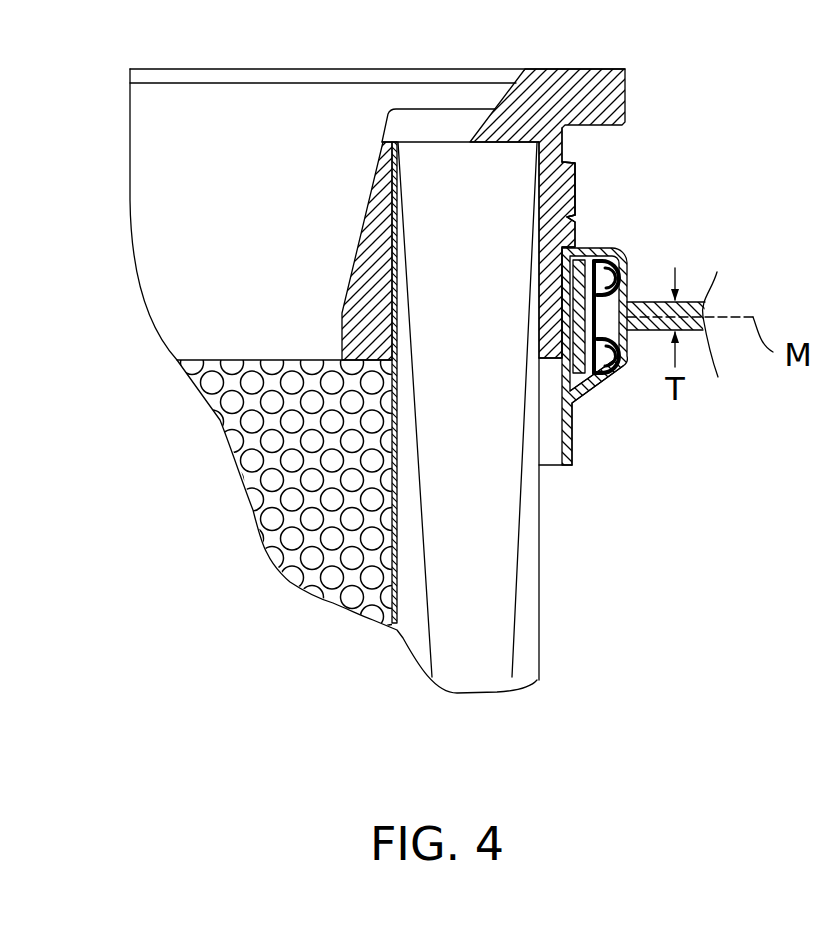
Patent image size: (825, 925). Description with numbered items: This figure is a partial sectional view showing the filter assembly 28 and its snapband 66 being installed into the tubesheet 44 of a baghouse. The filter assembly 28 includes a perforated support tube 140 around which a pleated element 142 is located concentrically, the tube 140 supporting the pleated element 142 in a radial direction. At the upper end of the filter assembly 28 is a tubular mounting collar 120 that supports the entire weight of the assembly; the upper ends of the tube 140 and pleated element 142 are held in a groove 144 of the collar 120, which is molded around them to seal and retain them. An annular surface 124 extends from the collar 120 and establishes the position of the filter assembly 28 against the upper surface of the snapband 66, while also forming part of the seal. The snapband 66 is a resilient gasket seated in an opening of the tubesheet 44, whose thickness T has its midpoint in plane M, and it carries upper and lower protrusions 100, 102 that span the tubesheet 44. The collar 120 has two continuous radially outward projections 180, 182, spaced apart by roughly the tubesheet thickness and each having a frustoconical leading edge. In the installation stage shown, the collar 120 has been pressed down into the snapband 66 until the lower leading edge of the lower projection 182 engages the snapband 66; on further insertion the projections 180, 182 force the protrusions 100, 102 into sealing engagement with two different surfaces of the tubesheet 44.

The filter assembly 28 is at (608, 191).
The tubesheet 44 is at (652, 331).
The snapband 66 is at (633, 286).
The upper protrusion 100 is at (634, 355).
The lower protrusion 102 is at (572, 383).
The collar 120 is at (602, 123).
The annular surface 124 is at (627, 122).
The perforated support tube 140 is at (377, 183).
The pleated element 142 is at (494, 482).
The groove 144 is at (537, 160).
The upper projection 180 is at (588, 163).
The lower projection 182 is at (575, 228).